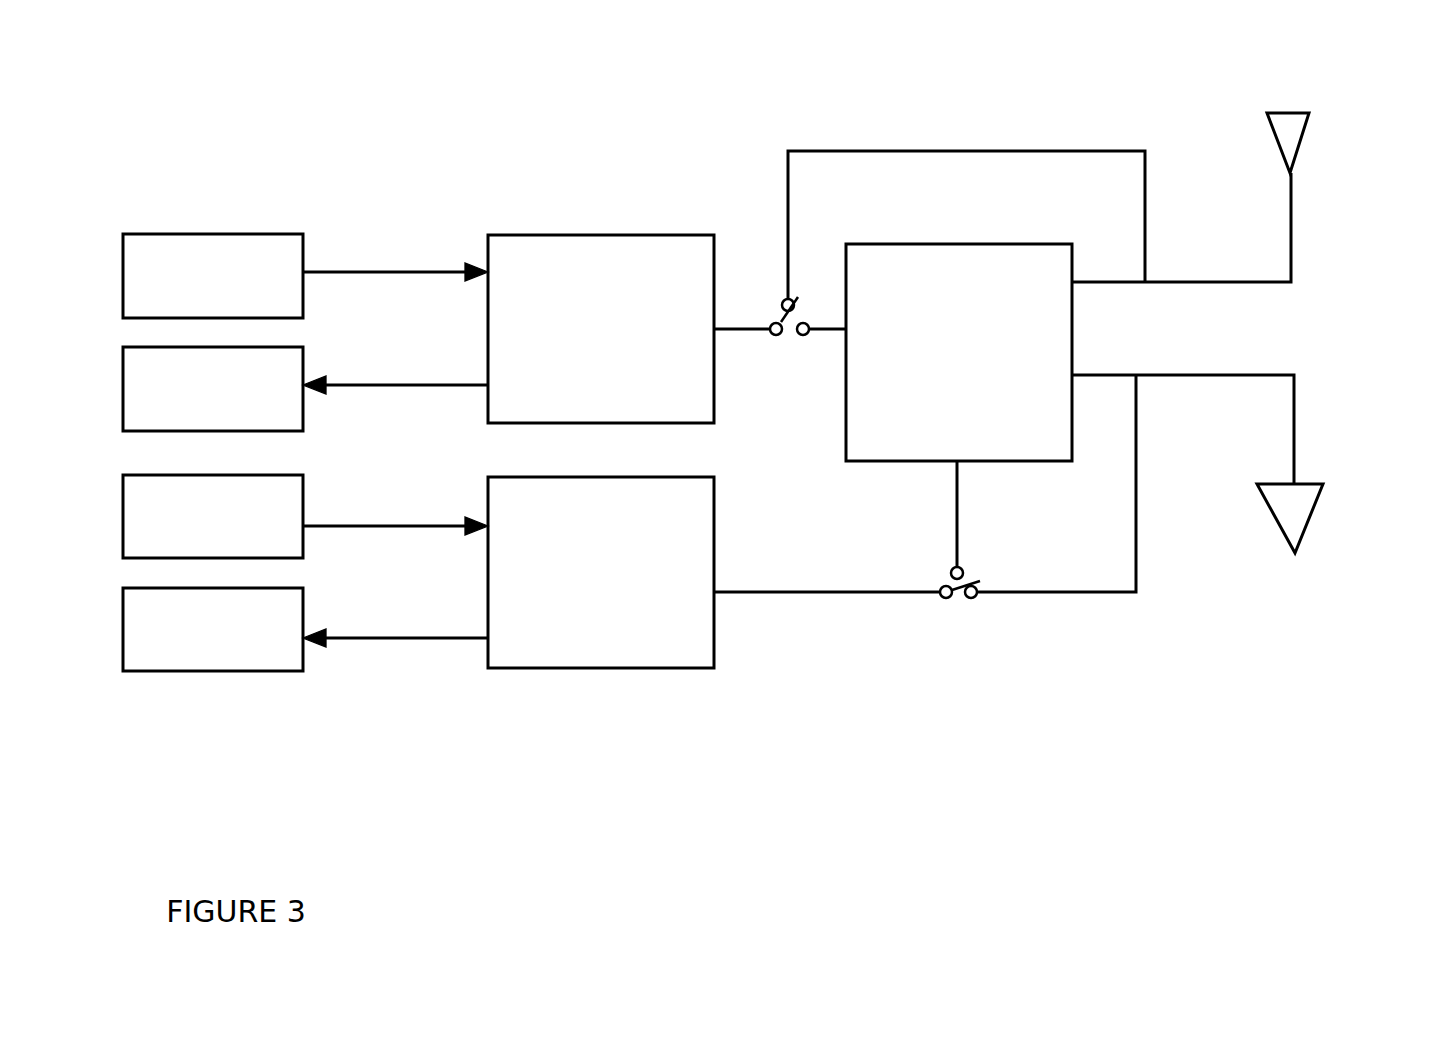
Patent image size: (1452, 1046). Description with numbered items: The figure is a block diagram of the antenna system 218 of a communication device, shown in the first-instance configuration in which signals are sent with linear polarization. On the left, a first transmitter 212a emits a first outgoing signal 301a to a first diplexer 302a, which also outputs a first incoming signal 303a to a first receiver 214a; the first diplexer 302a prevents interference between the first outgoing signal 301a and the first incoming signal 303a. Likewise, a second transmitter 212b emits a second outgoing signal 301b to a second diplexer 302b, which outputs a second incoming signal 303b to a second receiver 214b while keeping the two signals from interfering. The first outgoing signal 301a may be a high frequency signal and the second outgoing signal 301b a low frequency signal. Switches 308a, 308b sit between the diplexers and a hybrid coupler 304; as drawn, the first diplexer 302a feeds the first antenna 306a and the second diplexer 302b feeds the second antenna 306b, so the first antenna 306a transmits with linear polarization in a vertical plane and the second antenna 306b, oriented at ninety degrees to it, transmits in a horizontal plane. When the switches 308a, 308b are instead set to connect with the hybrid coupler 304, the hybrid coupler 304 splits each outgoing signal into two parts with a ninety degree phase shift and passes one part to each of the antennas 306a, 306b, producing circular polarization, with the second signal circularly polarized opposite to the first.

The antenna system 218 is at (235, 873).
The first transmitter 212a is at (213, 276).
The second transmitter 212b is at (213, 516).
The first receiver 214a is at (213, 389).
The second receiver 214b is at (213, 629).
The first outgoing signal 301a is at (395, 261).
The second outgoing signal 301b is at (395, 515).
The first incoming signal 303a is at (395, 374).
The second incoming signal 303b is at (395, 627).
The first diplexer 302a is at (601, 329).
The second diplexer 302b is at (601, 572).
The hybrid coupler 304 is at (959, 352).
The first switch 308a is at (777, 336).
The second switch 308b is at (944, 598).
The first antenna 306a is at (1295, 128).
The second antenna 306b is at (1298, 506).